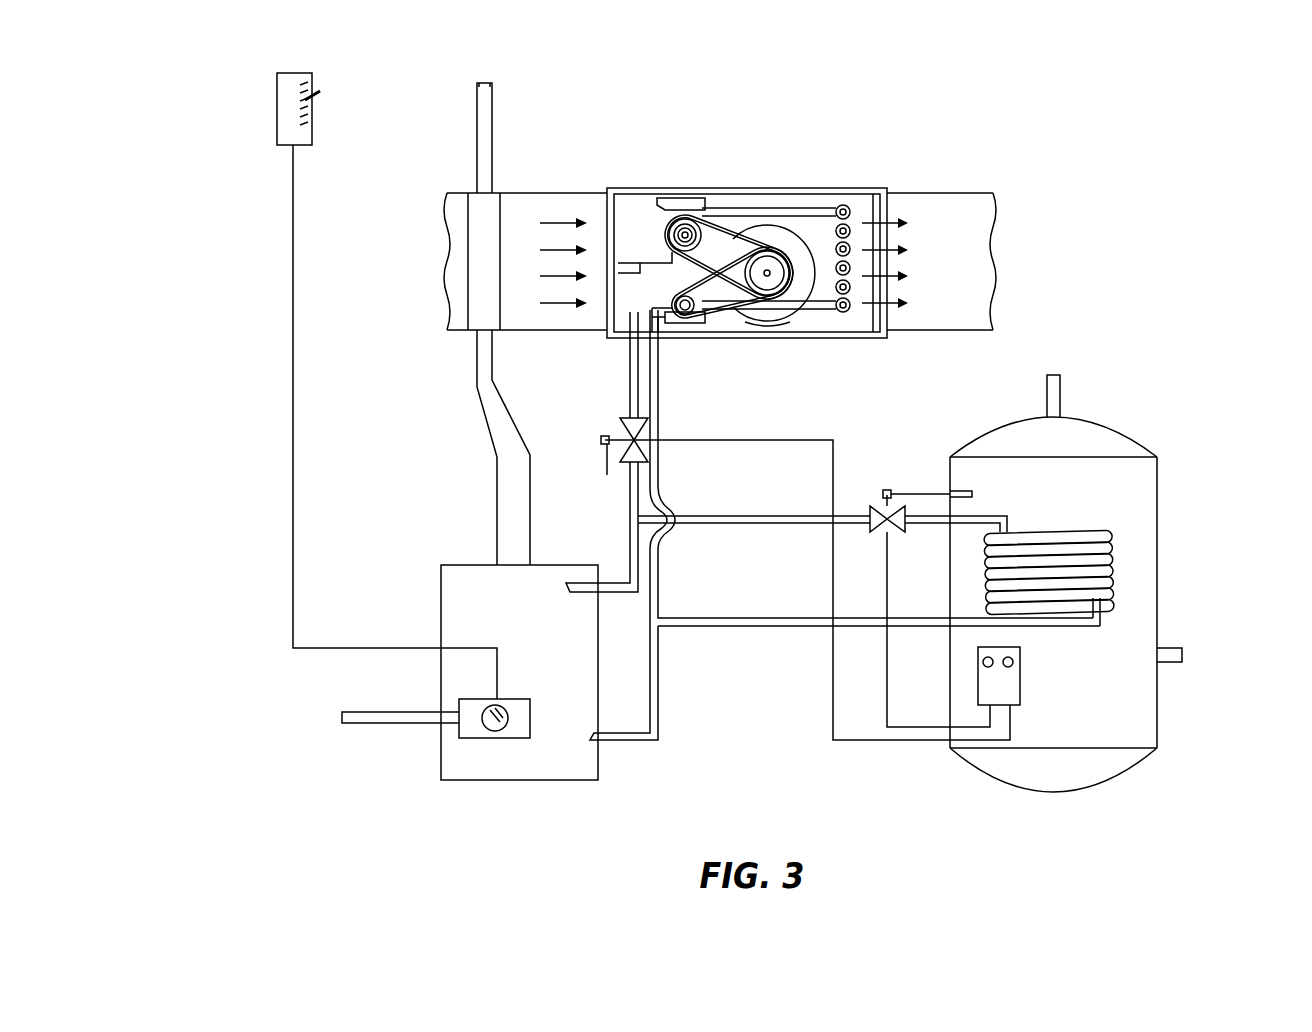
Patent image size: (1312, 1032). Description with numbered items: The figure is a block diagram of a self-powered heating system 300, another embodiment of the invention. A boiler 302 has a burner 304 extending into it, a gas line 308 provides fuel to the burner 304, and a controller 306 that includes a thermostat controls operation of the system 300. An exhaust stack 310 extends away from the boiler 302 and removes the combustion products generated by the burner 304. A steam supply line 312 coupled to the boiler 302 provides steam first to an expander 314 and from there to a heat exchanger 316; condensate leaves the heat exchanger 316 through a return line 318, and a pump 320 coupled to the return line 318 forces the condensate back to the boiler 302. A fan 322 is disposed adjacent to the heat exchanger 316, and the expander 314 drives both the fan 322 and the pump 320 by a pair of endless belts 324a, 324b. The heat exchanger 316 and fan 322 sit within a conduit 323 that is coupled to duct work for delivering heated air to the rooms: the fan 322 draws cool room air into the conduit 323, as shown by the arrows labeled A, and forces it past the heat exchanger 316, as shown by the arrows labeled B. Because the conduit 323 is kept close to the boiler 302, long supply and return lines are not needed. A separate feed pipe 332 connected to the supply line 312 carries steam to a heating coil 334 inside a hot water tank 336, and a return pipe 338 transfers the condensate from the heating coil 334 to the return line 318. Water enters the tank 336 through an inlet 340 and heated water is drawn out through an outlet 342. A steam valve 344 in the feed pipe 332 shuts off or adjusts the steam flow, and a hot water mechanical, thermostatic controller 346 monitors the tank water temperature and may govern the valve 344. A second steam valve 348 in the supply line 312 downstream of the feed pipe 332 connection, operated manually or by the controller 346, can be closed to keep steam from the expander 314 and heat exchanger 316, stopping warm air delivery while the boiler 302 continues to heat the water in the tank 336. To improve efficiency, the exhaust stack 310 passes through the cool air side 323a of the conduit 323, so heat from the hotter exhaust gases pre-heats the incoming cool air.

The heating system 300 is at (784, 100).
The boiler 302 is at (441, 610).
The burner 304 is at (492, 738).
The controller 306 is at (293, 73).
The gas line 308 is at (396, 724).
The exhaust stack 310 is at (517, 432).
The steam supply line 312 is at (630, 352).
The expander 314 is at (676, 228).
The heat exchanger 316 is at (834, 206).
The return line 318 is at (812, 320).
The pump 320 is at (676, 322).
The fan 322 is at (750, 222).
The conduit 323 is at (926, 185).
The cool air side 323a is at (553, 193).
The endless belt 324a is at (716, 214).
The endless belt 324b is at (728, 318).
The feed pipe 332 is at (717, 525).
The heating coil 334 is at (1100, 540).
The hot water tank 336 is at (1157, 580).
The return pipe 338 is at (716, 628).
The inlet 340 is at (1178, 648).
The outlet 342 is at (1062, 392).
The steam valve 344 is at (886, 490).
The hot water mechanical, thermostatic controller 346 is at (1020, 681).
The second steam valve 348 is at (624, 418).